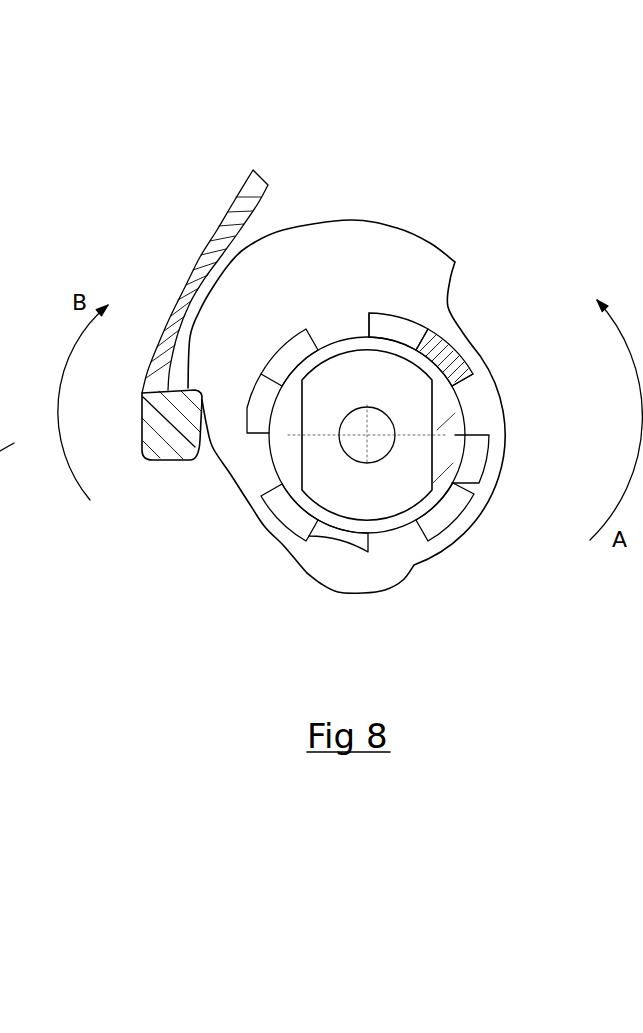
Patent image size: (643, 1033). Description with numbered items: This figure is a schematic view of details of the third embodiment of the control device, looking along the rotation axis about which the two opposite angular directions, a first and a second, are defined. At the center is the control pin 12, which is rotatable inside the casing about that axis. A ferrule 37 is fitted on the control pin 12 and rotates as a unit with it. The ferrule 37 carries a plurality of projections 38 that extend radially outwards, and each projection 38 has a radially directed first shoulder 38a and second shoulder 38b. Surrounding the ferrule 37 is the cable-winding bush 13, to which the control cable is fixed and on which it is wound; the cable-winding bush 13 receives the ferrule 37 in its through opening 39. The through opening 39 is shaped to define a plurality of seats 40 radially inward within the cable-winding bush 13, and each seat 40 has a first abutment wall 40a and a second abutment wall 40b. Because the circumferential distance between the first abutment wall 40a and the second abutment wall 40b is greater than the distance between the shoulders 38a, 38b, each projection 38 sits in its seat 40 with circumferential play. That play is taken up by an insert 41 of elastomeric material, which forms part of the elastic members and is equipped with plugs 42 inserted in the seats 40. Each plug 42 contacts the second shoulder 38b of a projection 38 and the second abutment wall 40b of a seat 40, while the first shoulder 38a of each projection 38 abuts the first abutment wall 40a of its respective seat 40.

The control pin 12 is at (330, 482).
The cable-winding bush 13 is at (248, 305).
The ferrule 37 is at (317, 393).
The projection 38 is at (512, 582).
The first shoulder 38a is at (417, 525).
The second shoulder 38b is at (485, 483).
The through opening 39 is at (250, 397).
The seat 40 is at (388, 210).
The first abutment wall 40a is at (465, 375).
The second abutment wall 40b is at (363, 333).
The insert 41 is at (338, 542).
The plug 42 is at (395, 325).